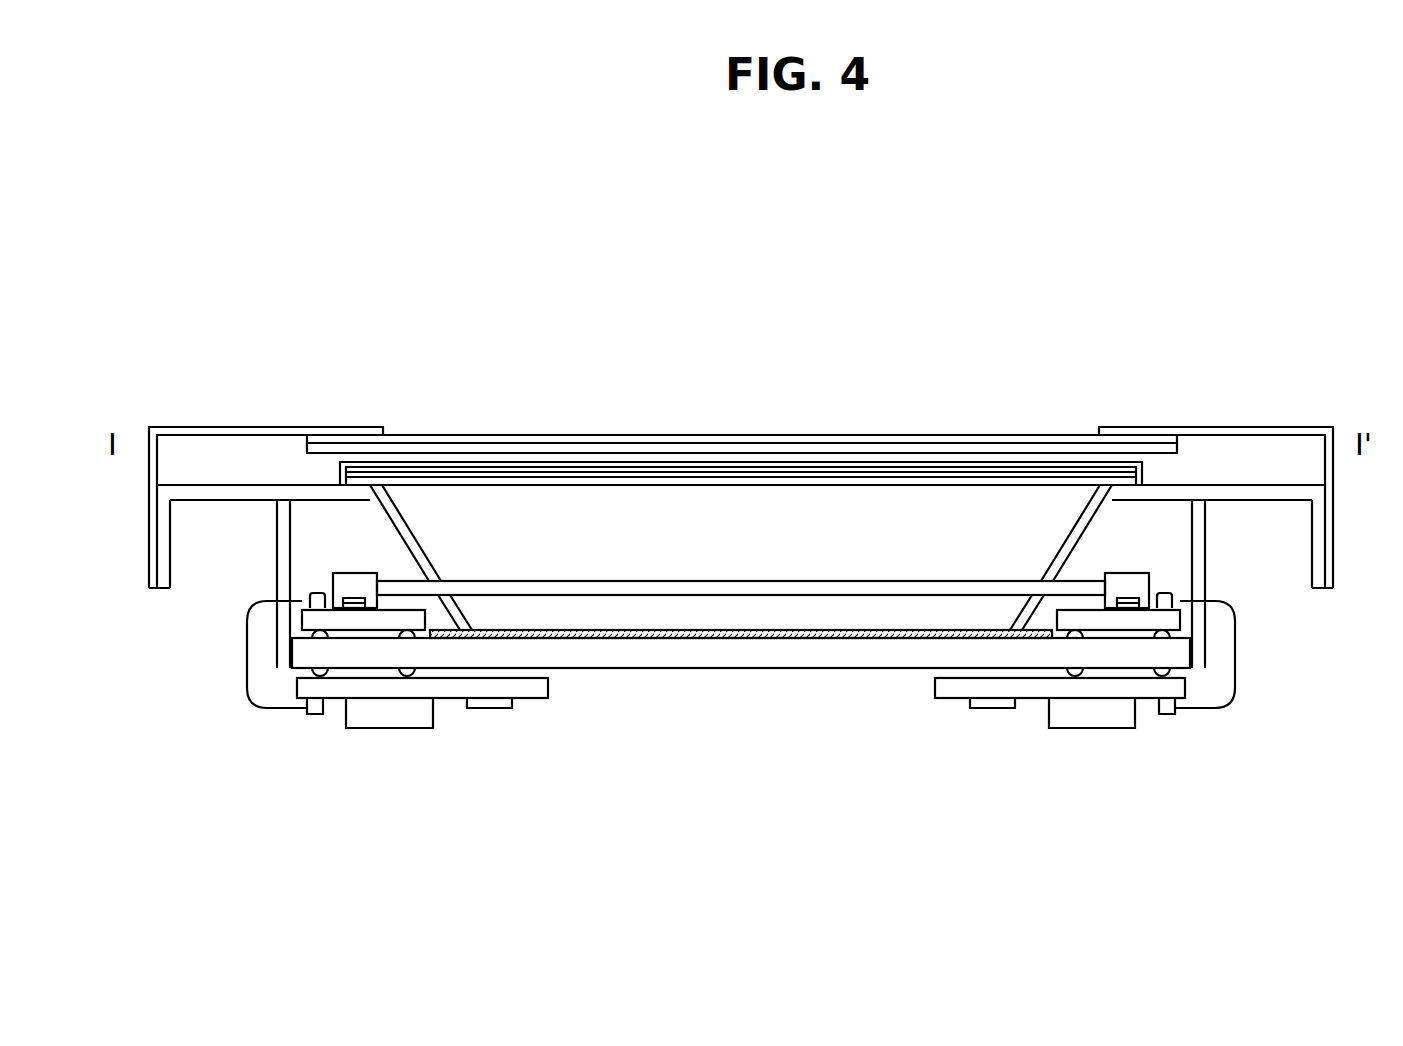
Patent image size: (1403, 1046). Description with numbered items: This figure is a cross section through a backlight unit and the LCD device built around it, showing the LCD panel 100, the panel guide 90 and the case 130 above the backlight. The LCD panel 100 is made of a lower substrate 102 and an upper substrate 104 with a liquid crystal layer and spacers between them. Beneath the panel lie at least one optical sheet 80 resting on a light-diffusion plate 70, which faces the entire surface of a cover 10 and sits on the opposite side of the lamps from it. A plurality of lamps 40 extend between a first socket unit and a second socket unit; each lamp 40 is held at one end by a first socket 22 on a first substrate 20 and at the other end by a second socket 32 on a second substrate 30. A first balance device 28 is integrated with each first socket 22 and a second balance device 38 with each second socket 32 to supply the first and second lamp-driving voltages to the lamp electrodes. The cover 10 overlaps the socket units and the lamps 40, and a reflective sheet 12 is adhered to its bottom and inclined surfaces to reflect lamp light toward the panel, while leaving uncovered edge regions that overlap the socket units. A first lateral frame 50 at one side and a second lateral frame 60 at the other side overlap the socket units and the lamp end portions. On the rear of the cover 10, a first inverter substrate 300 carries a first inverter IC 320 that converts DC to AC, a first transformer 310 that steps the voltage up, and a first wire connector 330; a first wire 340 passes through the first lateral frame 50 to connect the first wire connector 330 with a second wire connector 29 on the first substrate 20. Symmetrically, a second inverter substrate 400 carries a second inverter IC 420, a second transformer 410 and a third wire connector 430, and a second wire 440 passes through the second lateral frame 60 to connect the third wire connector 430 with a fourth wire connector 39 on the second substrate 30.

The cover 10 is at (667, 668).
The reflective sheet 12 is at (757, 640).
The first substrate 20 is at (302, 620).
The first socket 22 is at (352, 576).
The first balance device 28 is at (356, 598).
The second wire connector 29 is at (316, 593).
The second substrate 30 is at (1180, 618).
The second socket 32 is at (1125, 575).
The second balance device 38 is at (1125, 598).
The fourth wire connector 39 is at (1163, 593).
The lamp 40 is at (632, 581).
The first lateral frame 50 is at (214, 500).
The second lateral frame 60 is at (1265, 500).
The light-diffusion plate 70 is at (881, 467).
The optical sheet 80 is at (808, 462).
The panel guide 90 is at (270, 458).
The LCD panel 100 is at (742, 378).
The lower substrate 102 is at (571, 453).
The upper substrate 104 is at (479, 443).
The case 130 is at (200, 430).
The first inverter substrate 300 is at (549, 698).
The first transformer 310 is at (388, 728).
The first inverter IC 320 is at (489, 708).
The first wire connector 330 is at (316, 714).
The first wire 340 is at (247, 677).
The second inverter substrate 400 is at (935, 690).
The second transformer 410 is at (1093, 728).
The second inverter IC 420 is at (992, 708).
The third wire connector 430 is at (1166, 714).
The second wire 440 is at (1237, 652).